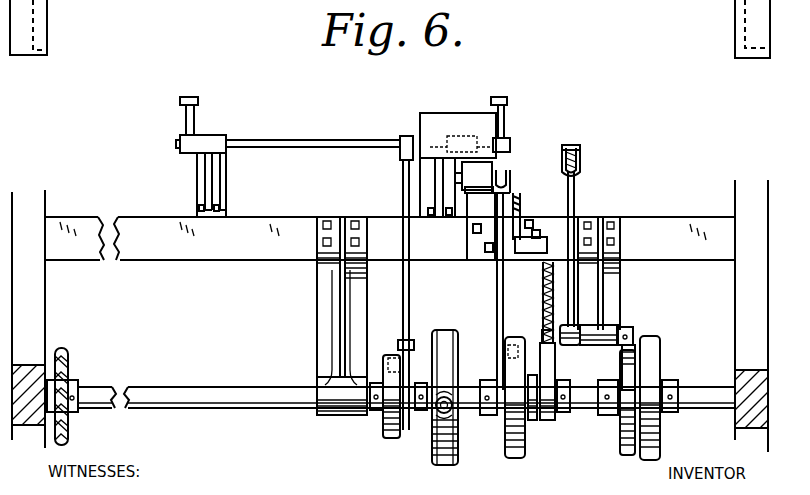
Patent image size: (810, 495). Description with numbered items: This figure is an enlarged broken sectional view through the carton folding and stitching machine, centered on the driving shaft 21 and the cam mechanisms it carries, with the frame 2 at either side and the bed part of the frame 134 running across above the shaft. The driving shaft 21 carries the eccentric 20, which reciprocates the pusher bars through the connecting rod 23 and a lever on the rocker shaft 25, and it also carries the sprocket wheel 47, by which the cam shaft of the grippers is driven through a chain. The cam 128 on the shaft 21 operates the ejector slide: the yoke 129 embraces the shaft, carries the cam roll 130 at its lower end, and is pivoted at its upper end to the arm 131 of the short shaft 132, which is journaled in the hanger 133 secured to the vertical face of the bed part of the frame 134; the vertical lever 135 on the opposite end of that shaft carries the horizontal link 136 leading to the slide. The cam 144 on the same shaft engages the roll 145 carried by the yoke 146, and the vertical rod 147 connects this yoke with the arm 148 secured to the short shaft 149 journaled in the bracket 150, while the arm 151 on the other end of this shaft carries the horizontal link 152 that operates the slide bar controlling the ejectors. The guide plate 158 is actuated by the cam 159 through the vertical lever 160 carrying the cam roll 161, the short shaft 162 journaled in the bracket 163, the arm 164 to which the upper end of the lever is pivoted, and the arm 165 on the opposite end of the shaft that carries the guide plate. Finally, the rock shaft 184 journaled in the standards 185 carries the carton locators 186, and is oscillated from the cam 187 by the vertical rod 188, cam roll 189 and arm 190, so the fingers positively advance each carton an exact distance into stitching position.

The frame 2 is at (390, 316).
The eccentric 20 is at (432, 452).
The driving shaft 21 is at (406, 389).
The connecting rod 23 is at (452, 412).
The rocker shaft 25 is at (488, 397).
The sprocket wheel 47 is at (66, 362).
The cam 128 is at (660, 432).
The yoke 129 is at (622, 447).
The cam roll 130 is at (640, 455).
The arm 131 is at (628, 327).
The short shaft 132 is at (637, 340).
The hanger 133 is at (620, 272).
The bed part of the frame 134 is at (110, 212).
The vertical lever 135 is at (575, 192).
The horizontal link 136 is at (578, 152).
The cam 144 is at (532, 422).
The roll 145 is at (553, 358).
The yoke 146 is at (556, 383).
The vertical rod 147 is at (531, 302).
The arm 148 is at (528, 237).
The short shaft 149 is at (497, 262).
The bracket 150 is at (537, 210).
The arm 151 is at (520, 195).
The horizontal link 152 is at (515, 195).
The guide plate 158 is at (458, 157).
The cam 159 is at (513, 460).
The vertical lever 160 is at (497, 308).
The cam roll 161 is at (523, 338).
The short shaft 162 is at (452, 180).
The bracket 163 is at (488, 215).
The arm 164 is at (498, 165).
The arm 165 is at (455, 213).
The rock shaft 184 is at (313, 134).
The standards 185 is at (226, 181).
The carton locators 186 is at (194, 110).
The cam 187 is at (383, 435).
The vertical rod 188 is at (403, 300).
The cam roll 189 is at (393, 351).
The arm 190 is at (404, 136).